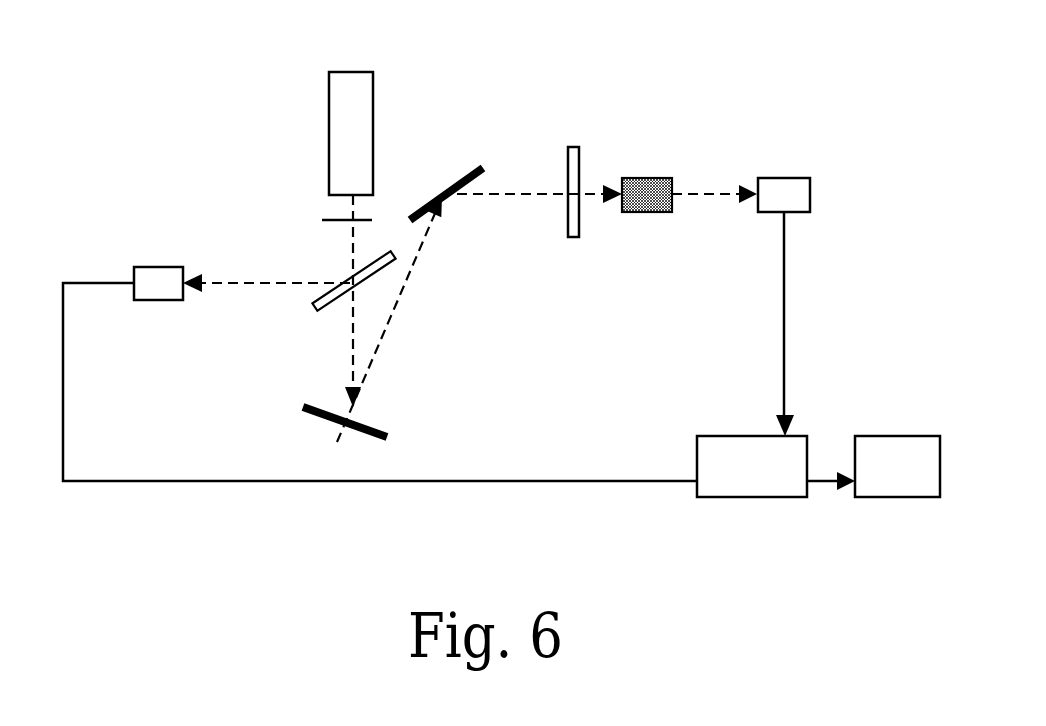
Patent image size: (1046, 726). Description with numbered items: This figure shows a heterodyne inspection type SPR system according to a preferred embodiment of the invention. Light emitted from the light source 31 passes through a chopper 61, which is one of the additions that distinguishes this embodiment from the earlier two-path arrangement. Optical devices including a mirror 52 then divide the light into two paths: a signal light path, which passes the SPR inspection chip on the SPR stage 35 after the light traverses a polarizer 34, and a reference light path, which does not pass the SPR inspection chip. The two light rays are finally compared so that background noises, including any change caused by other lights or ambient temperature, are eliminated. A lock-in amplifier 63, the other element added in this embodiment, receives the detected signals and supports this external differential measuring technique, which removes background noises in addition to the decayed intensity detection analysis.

The light source 31 is at (338, 102).
The chopper 61 is at (347, 220).
The polarizer 34 is at (566, 172).
The SPR stage 35 is at (649, 180).
The mirror 52 is at (365, 423).
The lock-in amplifier 63 is at (727, 452).